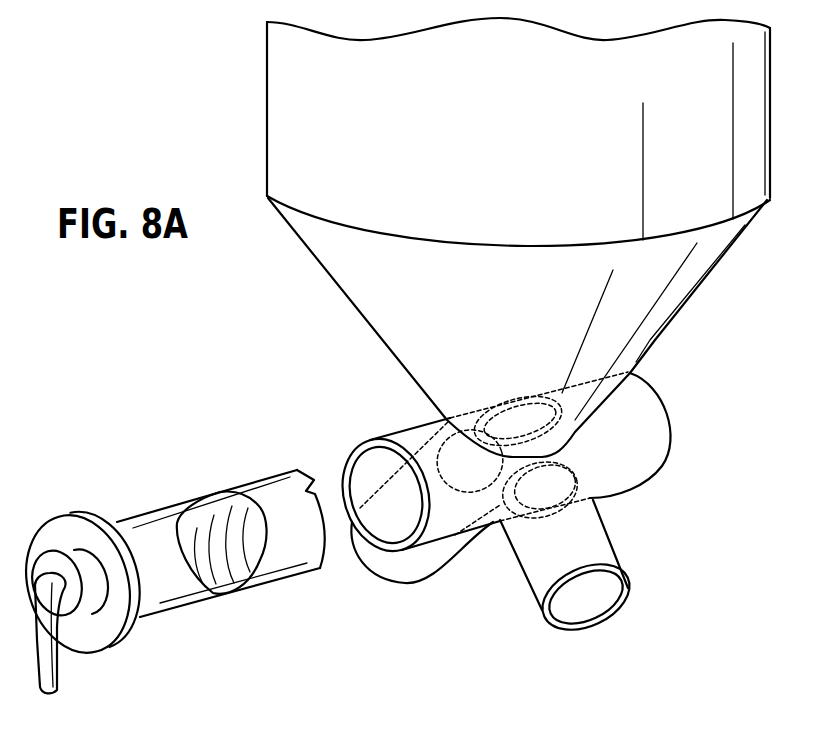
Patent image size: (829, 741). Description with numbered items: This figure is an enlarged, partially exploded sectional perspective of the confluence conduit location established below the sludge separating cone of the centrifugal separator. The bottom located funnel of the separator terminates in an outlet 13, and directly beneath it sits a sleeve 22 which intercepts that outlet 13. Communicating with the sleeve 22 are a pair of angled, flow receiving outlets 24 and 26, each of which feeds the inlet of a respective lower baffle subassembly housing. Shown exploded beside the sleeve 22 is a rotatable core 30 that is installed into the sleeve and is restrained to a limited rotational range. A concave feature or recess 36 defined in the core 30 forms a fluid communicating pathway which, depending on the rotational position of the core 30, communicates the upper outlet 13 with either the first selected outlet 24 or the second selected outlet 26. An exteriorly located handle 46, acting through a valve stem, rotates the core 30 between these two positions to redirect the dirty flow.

The outlet 13 is at (508, 400).
The sleeve 22 is at (493, 520).
The first selected outlet 24 is at (572, 632).
The second selected outlet 26 is at (390, 568).
The rotatable core 30 is at (157, 528).
The concave feature or recess 36 is at (233, 520).
The handle 46 is at (57, 693).